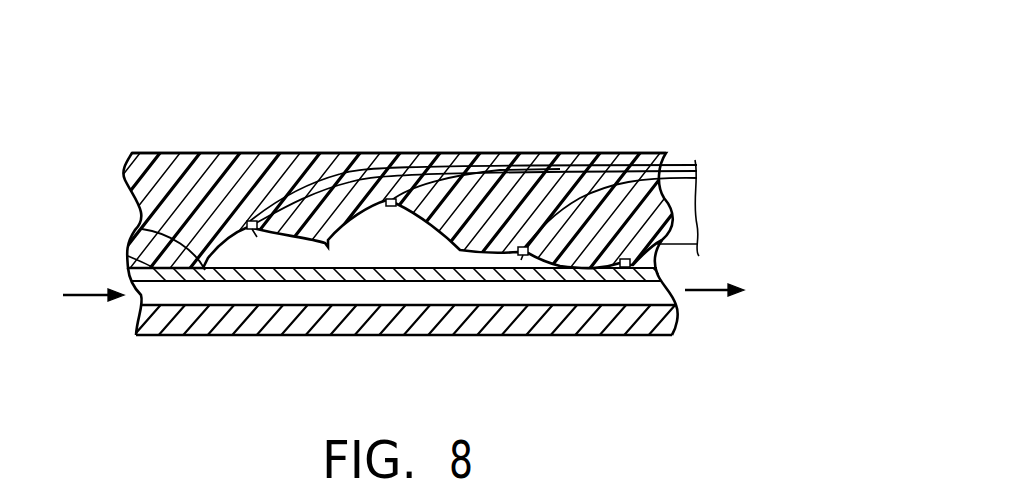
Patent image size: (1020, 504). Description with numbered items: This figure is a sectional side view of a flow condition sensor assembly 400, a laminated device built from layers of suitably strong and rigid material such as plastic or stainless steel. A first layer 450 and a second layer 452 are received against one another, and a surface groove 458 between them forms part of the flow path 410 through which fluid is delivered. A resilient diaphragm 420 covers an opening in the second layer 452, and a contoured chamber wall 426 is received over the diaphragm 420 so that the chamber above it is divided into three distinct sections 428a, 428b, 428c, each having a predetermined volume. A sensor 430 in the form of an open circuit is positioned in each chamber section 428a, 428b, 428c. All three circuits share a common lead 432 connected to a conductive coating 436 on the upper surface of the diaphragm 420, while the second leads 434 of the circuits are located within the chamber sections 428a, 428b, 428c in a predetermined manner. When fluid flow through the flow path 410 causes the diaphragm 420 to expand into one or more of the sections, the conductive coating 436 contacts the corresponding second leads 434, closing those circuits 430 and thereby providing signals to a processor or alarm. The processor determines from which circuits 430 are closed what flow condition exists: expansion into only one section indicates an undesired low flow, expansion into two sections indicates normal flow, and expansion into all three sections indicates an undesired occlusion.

The flow condition sensor assembly 400 is at (537, 72).
The second layer 452 is at (148, 153).
The chamber wall 426 is at (238, 153).
The sensor 430 is at (348, 172).
The conductive coating 436 is at (142, 229).
The diaphragm 420 is at (128, 260).
The surface groove 458 is at (143, 298).
The first layer 450 is at (157, 336).
The chamber section 428a is at (250, 229).
The chamber section 428b is at (391, 206).
The chamber section 428c is at (532, 258).
The lead 432 is at (625, 267).
The second leads 434 is at (257, 237).
The flow path 410 is at (702, 292).